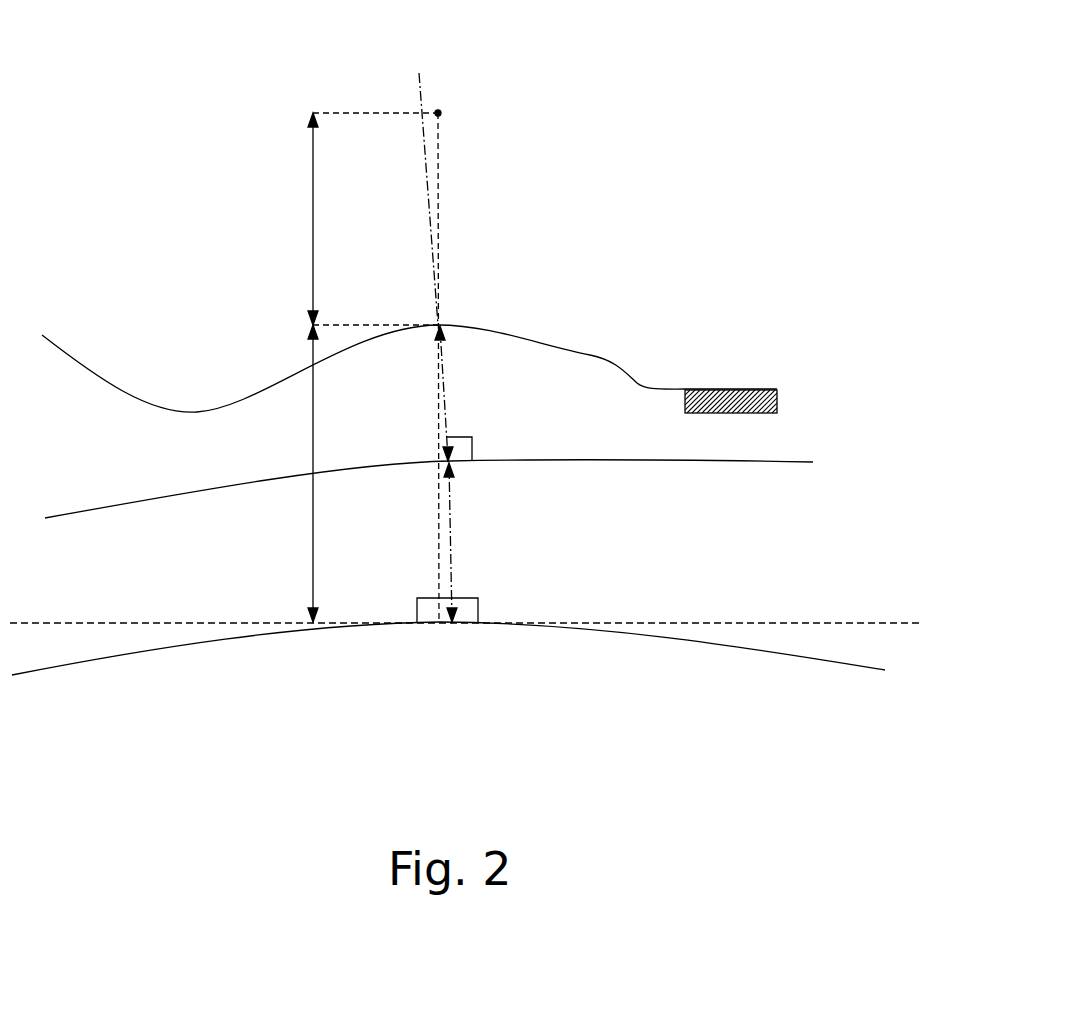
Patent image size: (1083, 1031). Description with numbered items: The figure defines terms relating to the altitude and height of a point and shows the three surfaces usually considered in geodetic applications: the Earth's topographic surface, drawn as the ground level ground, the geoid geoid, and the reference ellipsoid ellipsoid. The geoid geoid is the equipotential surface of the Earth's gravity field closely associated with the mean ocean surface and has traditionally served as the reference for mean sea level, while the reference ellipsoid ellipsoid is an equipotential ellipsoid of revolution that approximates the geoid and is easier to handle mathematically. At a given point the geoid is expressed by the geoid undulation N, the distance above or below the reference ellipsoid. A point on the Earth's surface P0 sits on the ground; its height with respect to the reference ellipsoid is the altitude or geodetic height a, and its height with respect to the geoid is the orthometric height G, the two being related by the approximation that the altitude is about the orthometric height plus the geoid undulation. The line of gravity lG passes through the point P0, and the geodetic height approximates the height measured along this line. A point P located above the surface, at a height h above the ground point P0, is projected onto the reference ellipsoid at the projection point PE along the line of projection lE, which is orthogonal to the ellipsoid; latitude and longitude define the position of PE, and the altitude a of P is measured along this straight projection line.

The point P is at (449, 361).
The point on the Earth's surface P0 is at (466, 297).
The projection of the point over the reference ellipsoid PE is at (433, 662).
The height h is at (342, 219).
The altitude a is at (282, 473).
The orthometric height G is at (463, 393).
The geoid undulation N is at (455, 542).
The line of gravity IG is at (595, 38).
The line of projection orthogonal to the reference ellipsoid IE is at (444, 220).
The Earth's topographic surface ground is at (418, 369).
The element geoid is at (462, 483).
The reference ellipsoid is at (465, 672).